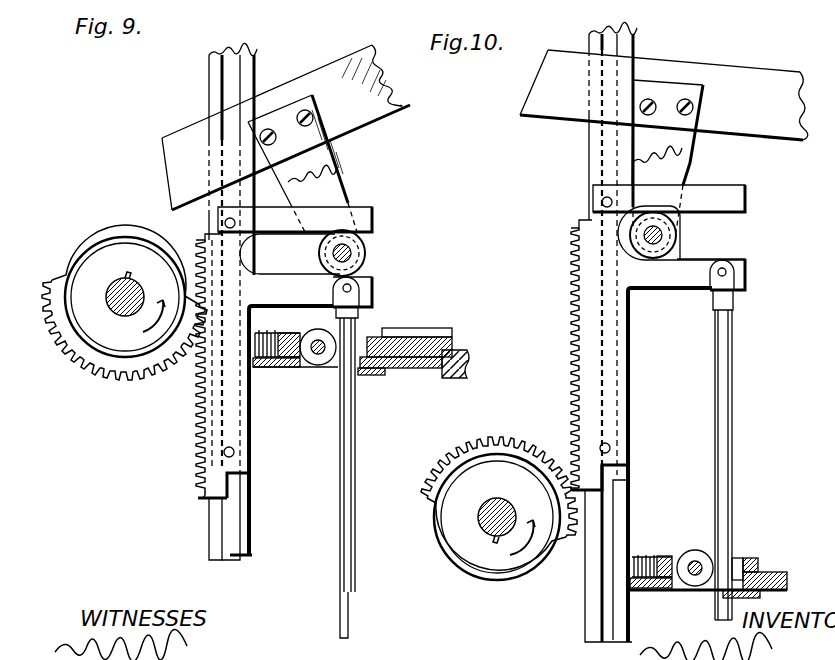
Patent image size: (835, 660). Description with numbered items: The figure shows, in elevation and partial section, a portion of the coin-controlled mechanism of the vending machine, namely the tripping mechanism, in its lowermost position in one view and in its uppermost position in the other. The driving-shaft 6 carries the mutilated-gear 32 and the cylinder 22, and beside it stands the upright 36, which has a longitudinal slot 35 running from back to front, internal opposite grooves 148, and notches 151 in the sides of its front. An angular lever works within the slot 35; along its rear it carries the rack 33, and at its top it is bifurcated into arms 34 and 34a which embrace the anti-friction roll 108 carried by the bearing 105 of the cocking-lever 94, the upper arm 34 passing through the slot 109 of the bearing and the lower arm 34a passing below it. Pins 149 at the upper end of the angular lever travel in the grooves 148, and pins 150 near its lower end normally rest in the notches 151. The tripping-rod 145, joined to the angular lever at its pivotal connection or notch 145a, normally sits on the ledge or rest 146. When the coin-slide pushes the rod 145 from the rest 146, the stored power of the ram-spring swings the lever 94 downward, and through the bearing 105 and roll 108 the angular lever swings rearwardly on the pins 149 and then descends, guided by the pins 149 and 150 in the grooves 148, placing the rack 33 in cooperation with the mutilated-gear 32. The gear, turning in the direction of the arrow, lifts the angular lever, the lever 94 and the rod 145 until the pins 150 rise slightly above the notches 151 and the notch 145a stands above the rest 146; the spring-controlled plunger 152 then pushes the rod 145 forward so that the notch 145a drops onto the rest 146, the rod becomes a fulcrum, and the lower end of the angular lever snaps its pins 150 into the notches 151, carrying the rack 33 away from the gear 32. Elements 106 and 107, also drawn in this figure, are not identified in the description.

In FIG. 9, the driving-shaft 6 is at (118, 287).
In FIG. 10, the driving-shaft 6 is at (479, 522).
In FIG. 9, the cylinder 22 is at (128, 307).
In FIG. 10, the cylinder 22 is at (506, 511).
In FIG. 9, the mutilated-gear 32 is at (102, 358).
In FIG. 10, the mutilated-gear 32 is at (500, 443).
In FIG. 9, the rack 33 is at (200, 403).
In FIG. 10, the rack 33 is at (582, 297).
In FIG. 9, the arm 34 is at (373, 214).
In FIG. 10, the arm 34 is at (738, 200).
In FIG. 9, the arm 34a is at (373, 298).
In FIG. 10, the arm 34a is at (746, 277).
In FIG. 9, the longitudinal slot 35 is at (209, 521).
In FIG. 10, the longitudinal slot 35 is at (592, 148).
In FIG. 9, the upright 36 is at (255, 508).
In FIG. 10, the upright 36 is at (588, 624).
In FIG. 9, the lever 94 is at (388, 100).
In FIG. 10, the lever 94 is at (664, 95).
In FIG. 9, the bearing 105 is at (283, 108).
In FIG. 10, the bearing 105 is at (668, 93).
In FIG. 9, the screws 106 is at (287, 138).
In FIG. 10, the screws 106 is at (680, 128).
In FIG. 9, the roller 107 is at (350, 253).
In FIG. 10, the roller 107 is at (680, 238).
In FIG. 9, the anti-friction roll 108 is at (365, 265).
In FIG. 10, the anti-friction roll 108 is at (662, 256).
In FIG. 9, the slot 109 is at (340, 194).
In FIG. 10, the slot 109 is at (694, 178).
In FIG. 9, the tripping-rod 145 is at (354, 470).
In FIG. 10, the tripping-rod 145 is at (729, 394).
In FIG. 9, the pivotal connection 145a is at (348, 594).
In FIG. 10, the pivotal connection 145a is at (718, 586).
In FIG. 9, the ledge or rest 146 is at (365, 376).
In FIG. 10, the ledge or rest 146 is at (762, 545).
In FIG. 9, the grooves 148 is at (229, 550).
In FIG. 10, the grooves 148 is at (610, 536).
In FIG. 9, the pins 149 is at (225, 225).
In FIG. 10, the pins 149 is at (602, 202).
In FIG. 9, the pins 150 is at (234, 452).
In FIG. 10, the pins 150 is at (610, 448).
In FIG. 9, the notches 151 is at (243, 245).
In FIG. 10, the notches 151 is at (617, 473).
In FIG. 9, the spring-controlled plunger 152 is at (312, 363).
In FIG. 10, the spring-controlled plunger 152 is at (692, 563).